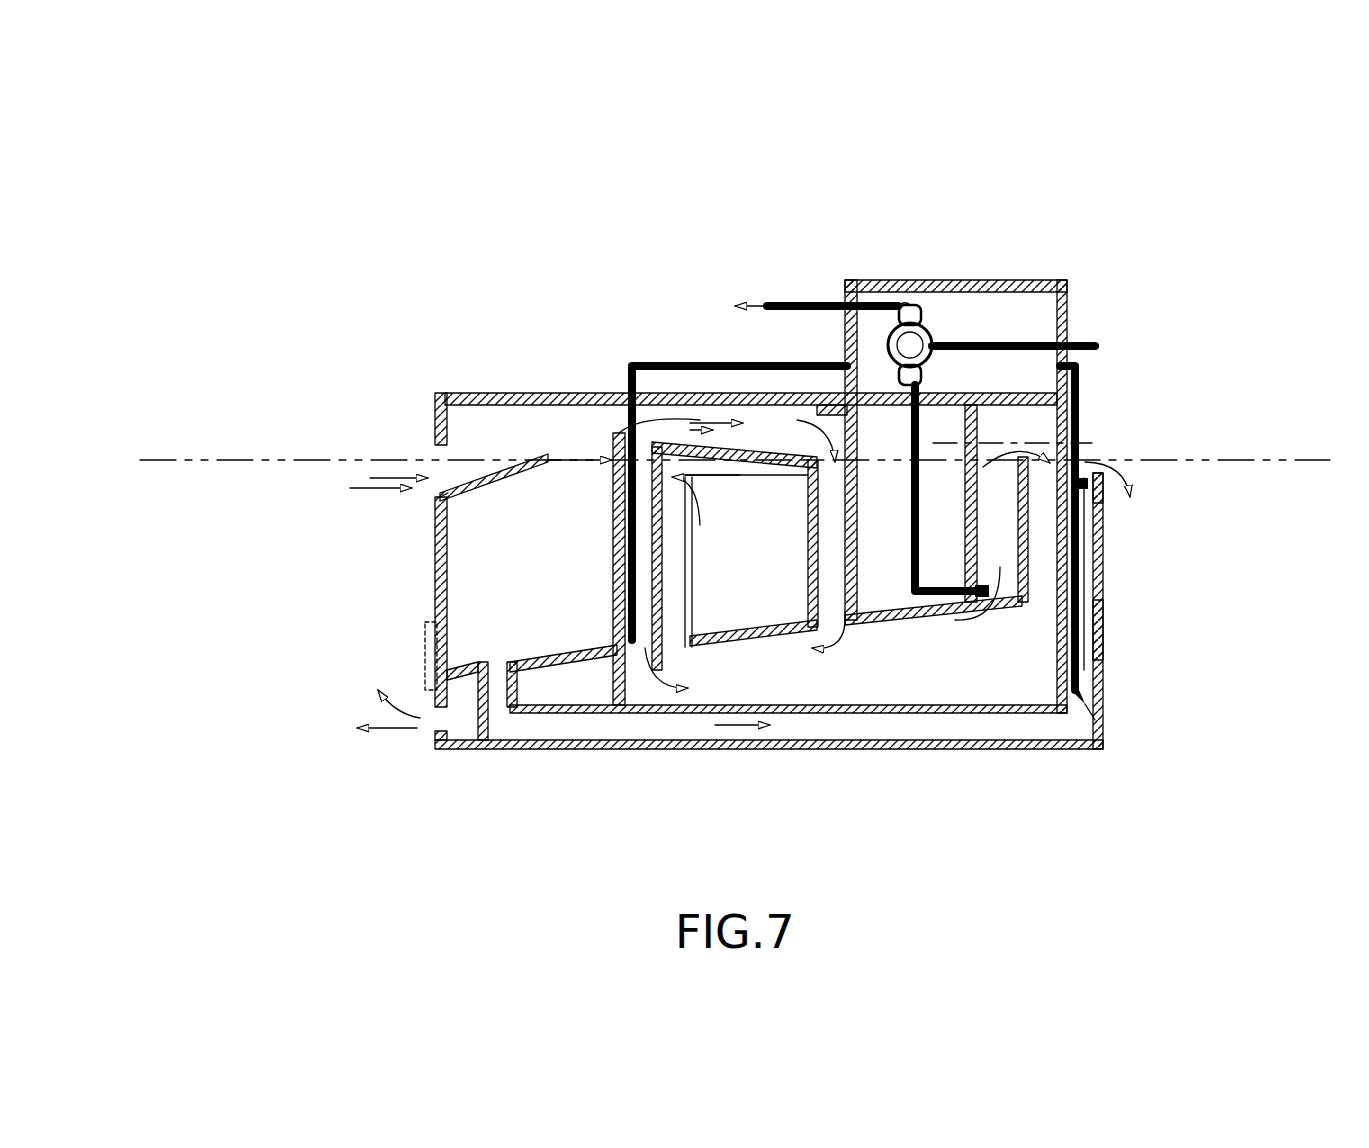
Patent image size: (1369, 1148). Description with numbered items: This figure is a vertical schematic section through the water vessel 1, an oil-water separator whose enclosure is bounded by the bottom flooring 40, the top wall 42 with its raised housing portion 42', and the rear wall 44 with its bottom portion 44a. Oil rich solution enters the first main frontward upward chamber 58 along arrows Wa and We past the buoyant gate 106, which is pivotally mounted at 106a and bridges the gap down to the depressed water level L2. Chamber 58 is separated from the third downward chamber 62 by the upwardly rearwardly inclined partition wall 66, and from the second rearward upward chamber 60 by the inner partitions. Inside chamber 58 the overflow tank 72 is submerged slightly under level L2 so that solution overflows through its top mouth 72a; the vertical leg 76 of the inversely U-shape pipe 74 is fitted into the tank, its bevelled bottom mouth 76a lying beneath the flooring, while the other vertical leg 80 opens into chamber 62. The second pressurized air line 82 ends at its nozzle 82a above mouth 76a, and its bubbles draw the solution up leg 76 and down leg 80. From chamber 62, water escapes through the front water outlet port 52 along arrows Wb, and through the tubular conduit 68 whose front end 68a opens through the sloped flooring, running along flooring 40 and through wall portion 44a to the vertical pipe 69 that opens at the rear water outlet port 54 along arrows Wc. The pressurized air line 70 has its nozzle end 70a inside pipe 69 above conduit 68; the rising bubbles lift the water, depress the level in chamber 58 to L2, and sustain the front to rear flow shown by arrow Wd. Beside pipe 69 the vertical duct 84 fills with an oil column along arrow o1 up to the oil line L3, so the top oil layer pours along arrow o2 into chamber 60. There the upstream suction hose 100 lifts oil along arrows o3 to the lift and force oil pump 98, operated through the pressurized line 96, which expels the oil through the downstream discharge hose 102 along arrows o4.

The fuel supply system 1 is at (98, 392).
The bottom flooring 40 is at (769, 610).
The top wall 42 is at (743, 287).
The auxiliary housing 42' is at (1028, 421).
The rear wall 44 is at (1008, 550).
The bottom portion of rear wall 44a is at (1109, 646).
The front water outlet port 52 is at (366, 486).
The rear water outlet port 54 is at (1177, 434).
The first main frontward upward chamber 58 is at (570, 619).
The second rearward upward chamber 60 is at (895, 566).
The third downward chamber 62 is at (780, 696).
The inclined partition wall 66 is at (801, 636).
The bottom lateral tubular conduit 68 is at (753, 768).
The front end of conduit 68a is at (379, 747).
The vertical pipe 69 is at (1161, 641).
The pressurized air line 70 is at (1147, 528).
The air output nozzle end portion 70a is at (1150, 734).
The overflow tank 72 is at (746, 561).
The top mouth of tank 72a is at (745, 489).
The inversely U-shape pipe 74 is at (743, 326).
The vertical leg 76 is at (698, 558).
The bottom bevelled mouth 76a is at (553, 661).
The other vertical leg 80 is at (857, 543).
The second pressurized air line 82 is at (739, 385).
The air outlet nozzle 82a is at (590, 562).
The vertical duct 84 is at (1149, 566).
The pressurized line 96 is at (1060, 312).
The lift and force oil pump 98 is at (1006, 287).
The upstream suction hose 100 is at (979, 487).
The downstream discharge hose 102 is at (890, 240).
The buoyant gate 106 is at (526, 499).
The pivot mount of gate 106a is at (326, 546).
The depressed water level L2 is at (762, 349).
The oil line L3 is at (1104, 387).
The oil column build-up arrow o1 is at (1118, 547).
The oil overflow arrow o2 is at (1091, 489).
The oil lift arrows o3 is at (955, 629).
The oil discharge arrows o4 is at (855, 218).
The intake flow arrows Wa is at (336, 438).
The front outlet flow arrows Wb is at (326, 741).
The rear outlet flow arrows Wc is at (1197, 482).
The front to rear flow arrow Wd is at (576, 799).
The water flow e We is at (302, 520).